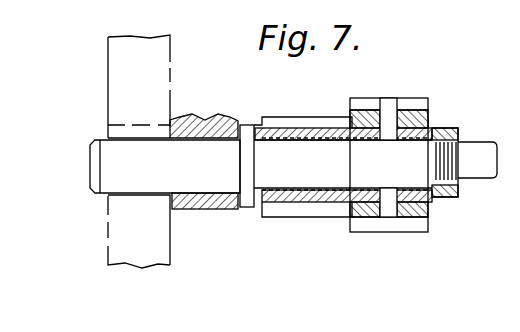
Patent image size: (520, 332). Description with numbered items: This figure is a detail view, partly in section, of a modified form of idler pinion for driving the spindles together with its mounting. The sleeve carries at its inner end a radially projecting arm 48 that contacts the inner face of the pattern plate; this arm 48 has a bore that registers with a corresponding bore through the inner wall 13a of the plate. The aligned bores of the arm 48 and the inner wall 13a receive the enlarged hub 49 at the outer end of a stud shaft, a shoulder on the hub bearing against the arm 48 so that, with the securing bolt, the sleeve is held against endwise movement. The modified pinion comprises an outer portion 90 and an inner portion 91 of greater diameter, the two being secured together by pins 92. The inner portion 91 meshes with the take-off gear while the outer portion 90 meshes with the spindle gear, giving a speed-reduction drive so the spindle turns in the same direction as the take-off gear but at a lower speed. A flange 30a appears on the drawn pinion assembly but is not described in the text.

The inner wall of plate 13a is at (107, 97).
The radially projecting arm 48 is at (207, 117).
The enlarged hub 49 is at (112, 184).
The outer portion of pinion 90 is at (302, 130).
The flange of sleeve 30a is at (325, 208).
The inner portion of pinion 91 is at (418, 105).
The pins 92 is at (385, 114).